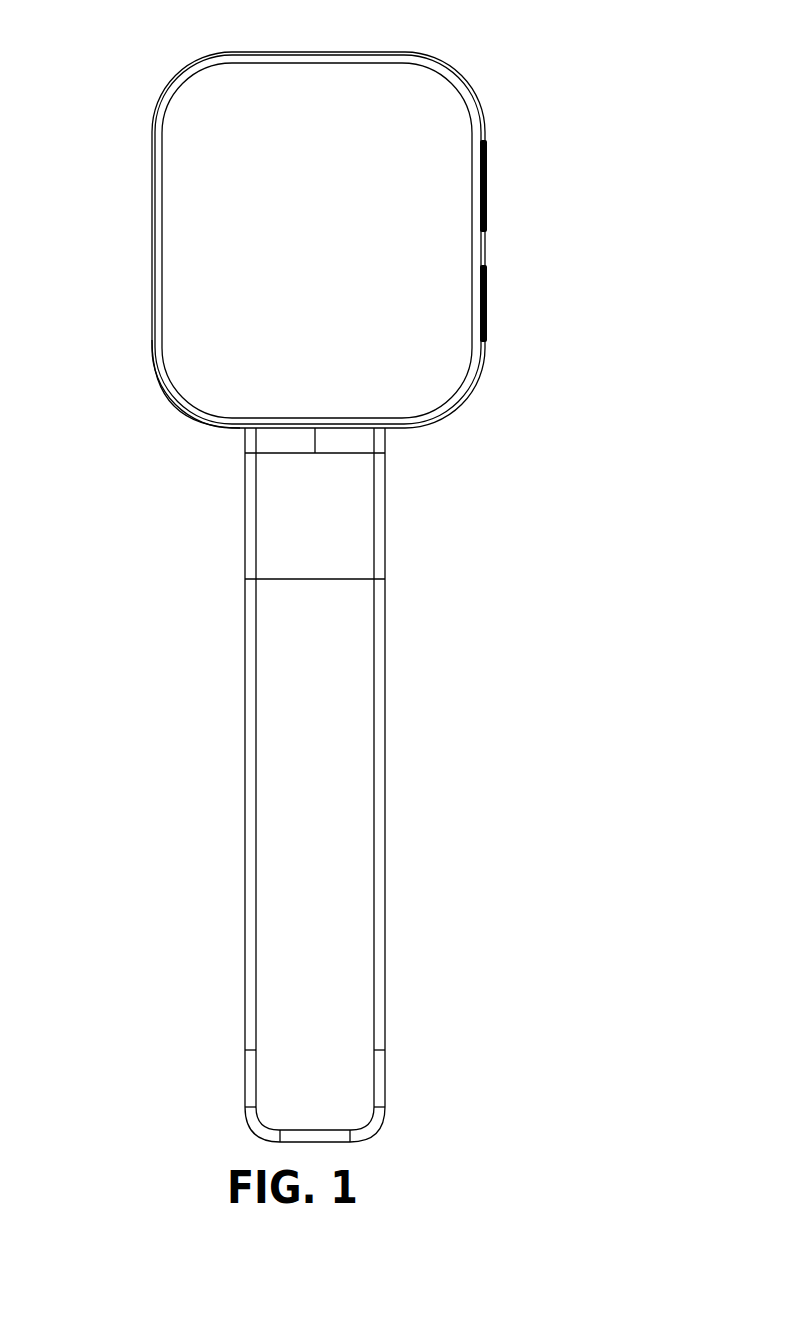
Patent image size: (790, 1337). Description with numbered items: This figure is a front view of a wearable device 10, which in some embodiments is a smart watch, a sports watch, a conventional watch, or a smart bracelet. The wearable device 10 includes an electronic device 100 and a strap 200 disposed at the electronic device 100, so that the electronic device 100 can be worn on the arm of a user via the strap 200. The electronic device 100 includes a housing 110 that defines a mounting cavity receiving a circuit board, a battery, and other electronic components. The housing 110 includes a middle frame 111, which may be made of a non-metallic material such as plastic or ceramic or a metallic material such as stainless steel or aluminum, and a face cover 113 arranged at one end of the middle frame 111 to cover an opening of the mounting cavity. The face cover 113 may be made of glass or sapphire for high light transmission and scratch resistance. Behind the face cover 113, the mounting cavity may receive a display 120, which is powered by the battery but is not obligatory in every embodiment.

The wearable device 10 is at (126, 106).
The electronic device 100 is at (426, 183).
The housing 110 is at (152, 280).
The middle frame 111 is at (156, 381).
The face cover 113 is at (190, 186).
The display 120 is at (430, 360).
The strap 200 is at (350, 696).